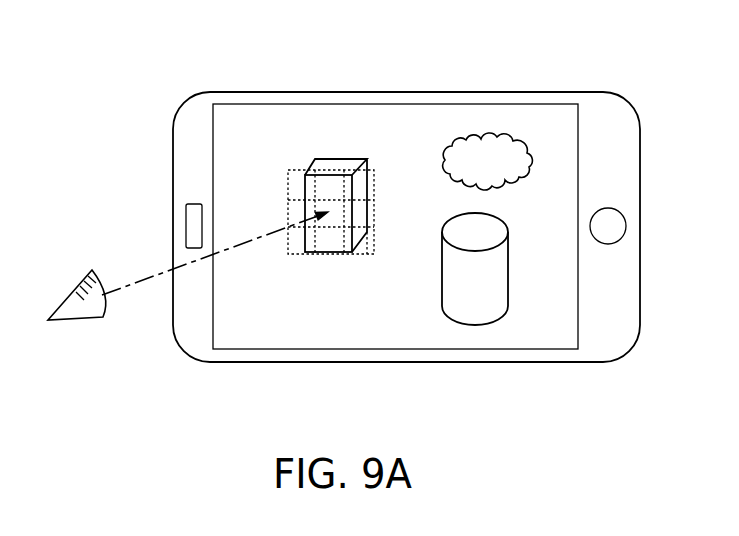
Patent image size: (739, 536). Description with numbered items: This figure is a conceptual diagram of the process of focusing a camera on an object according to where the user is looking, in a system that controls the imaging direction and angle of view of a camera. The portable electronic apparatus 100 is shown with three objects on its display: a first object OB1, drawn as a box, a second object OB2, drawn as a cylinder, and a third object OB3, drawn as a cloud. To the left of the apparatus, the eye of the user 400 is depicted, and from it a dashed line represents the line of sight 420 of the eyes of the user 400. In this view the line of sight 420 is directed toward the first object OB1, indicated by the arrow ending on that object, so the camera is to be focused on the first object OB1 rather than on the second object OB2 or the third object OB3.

The portable electronic apparatus 100 is at (583, 92).
The user 400 is at (73, 318).
The line of sight 420 is at (122, 288).
The first object OB1 is at (340, 162).
The second object OB2 is at (497, 312).
The third object OB3 is at (490, 155).